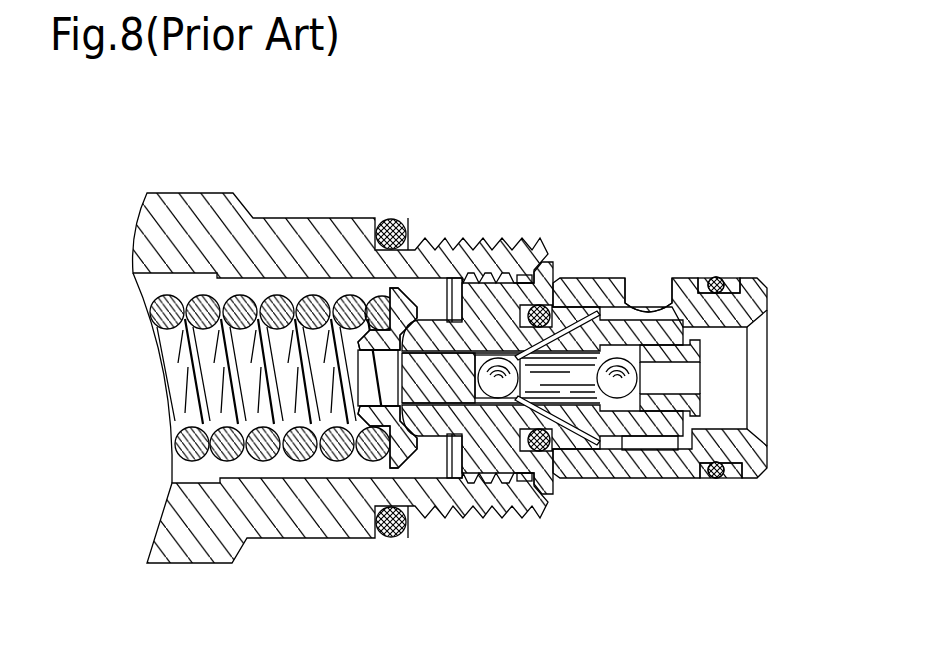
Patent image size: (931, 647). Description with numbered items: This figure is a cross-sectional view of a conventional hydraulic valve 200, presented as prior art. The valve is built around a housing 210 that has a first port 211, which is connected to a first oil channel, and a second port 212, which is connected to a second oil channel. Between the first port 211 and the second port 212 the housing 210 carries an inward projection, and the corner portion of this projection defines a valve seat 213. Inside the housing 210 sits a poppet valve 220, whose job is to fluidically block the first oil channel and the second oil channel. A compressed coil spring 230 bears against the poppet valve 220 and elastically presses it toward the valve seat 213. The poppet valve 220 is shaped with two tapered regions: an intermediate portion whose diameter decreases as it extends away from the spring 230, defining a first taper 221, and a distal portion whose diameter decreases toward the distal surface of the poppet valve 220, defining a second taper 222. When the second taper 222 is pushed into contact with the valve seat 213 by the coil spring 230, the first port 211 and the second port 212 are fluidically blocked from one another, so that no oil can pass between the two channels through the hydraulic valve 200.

The hydraulic valve 200 is at (203, 178).
The housing 210 is at (320, 522).
The first port 211 is at (727, 405).
The second port 212 is at (648, 302).
The valve seat 213 is at (685, 432).
The poppet valve 220 is at (648, 433).
The first taper 221 is at (592, 300).
The second taper 222 is at (700, 327).
The coil spring 230 is at (275, 297).